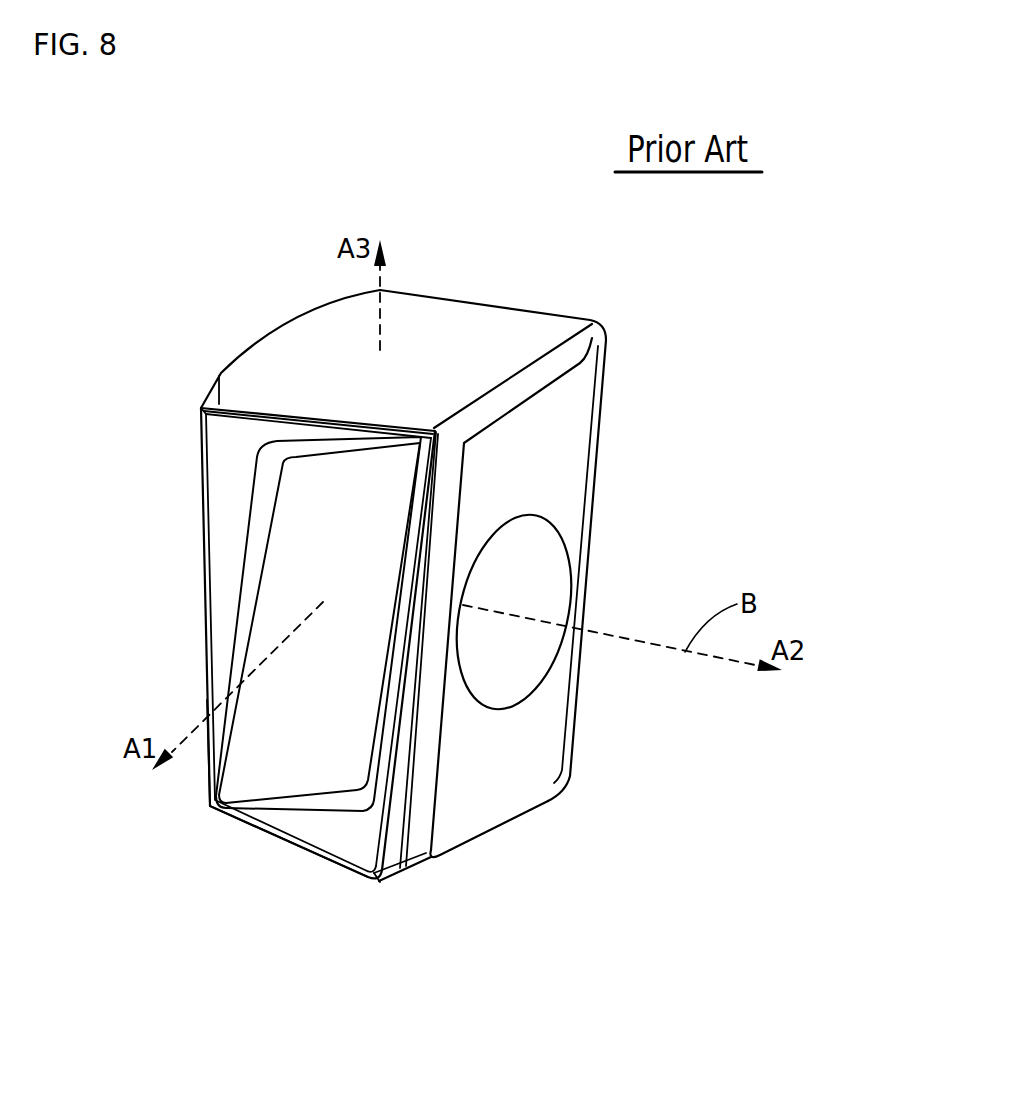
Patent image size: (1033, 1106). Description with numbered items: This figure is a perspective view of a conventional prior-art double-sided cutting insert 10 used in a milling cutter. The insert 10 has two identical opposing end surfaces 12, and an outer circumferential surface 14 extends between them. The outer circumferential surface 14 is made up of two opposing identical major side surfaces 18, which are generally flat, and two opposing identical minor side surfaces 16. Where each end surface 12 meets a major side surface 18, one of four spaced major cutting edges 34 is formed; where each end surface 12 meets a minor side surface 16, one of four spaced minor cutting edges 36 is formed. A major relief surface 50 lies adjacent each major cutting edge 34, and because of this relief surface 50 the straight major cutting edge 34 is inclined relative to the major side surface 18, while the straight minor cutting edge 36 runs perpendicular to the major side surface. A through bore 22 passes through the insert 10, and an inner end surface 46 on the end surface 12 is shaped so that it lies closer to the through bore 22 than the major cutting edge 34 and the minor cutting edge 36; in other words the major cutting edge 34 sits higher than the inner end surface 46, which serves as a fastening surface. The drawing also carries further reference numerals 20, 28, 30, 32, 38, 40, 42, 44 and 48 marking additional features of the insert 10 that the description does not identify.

The double-sided cutting insert 10 is at (710, 272).
The end surface 12 is at (258, 572).
The outer circumferential surface 14 is at (297, 352).
The minor side surface 16 is at (462, 327).
The major side surface 18 is at (548, 430).
The chamfer surface 20 is at (535, 380).
The through bore 22 is at (538, 590).
The corner edge 28 is at (203, 407).
The corner 30 is at (212, 808).
The front face 32 is at (178, 498).
The major cutting edge 34 is at (262, 645).
The minor cutting edge 36 is at (268, 838).
The cutting edge 38 is at (440, 438).
The rim edge 40 is at (200, 415).
The corner edge 42 is at (438, 452).
The land surface 44 is at (228, 527).
The inner end surface 46 is at (252, 650).
The recessed pocket 48 is at (258, 613).
The major relief surface 50 is at (417, 758).